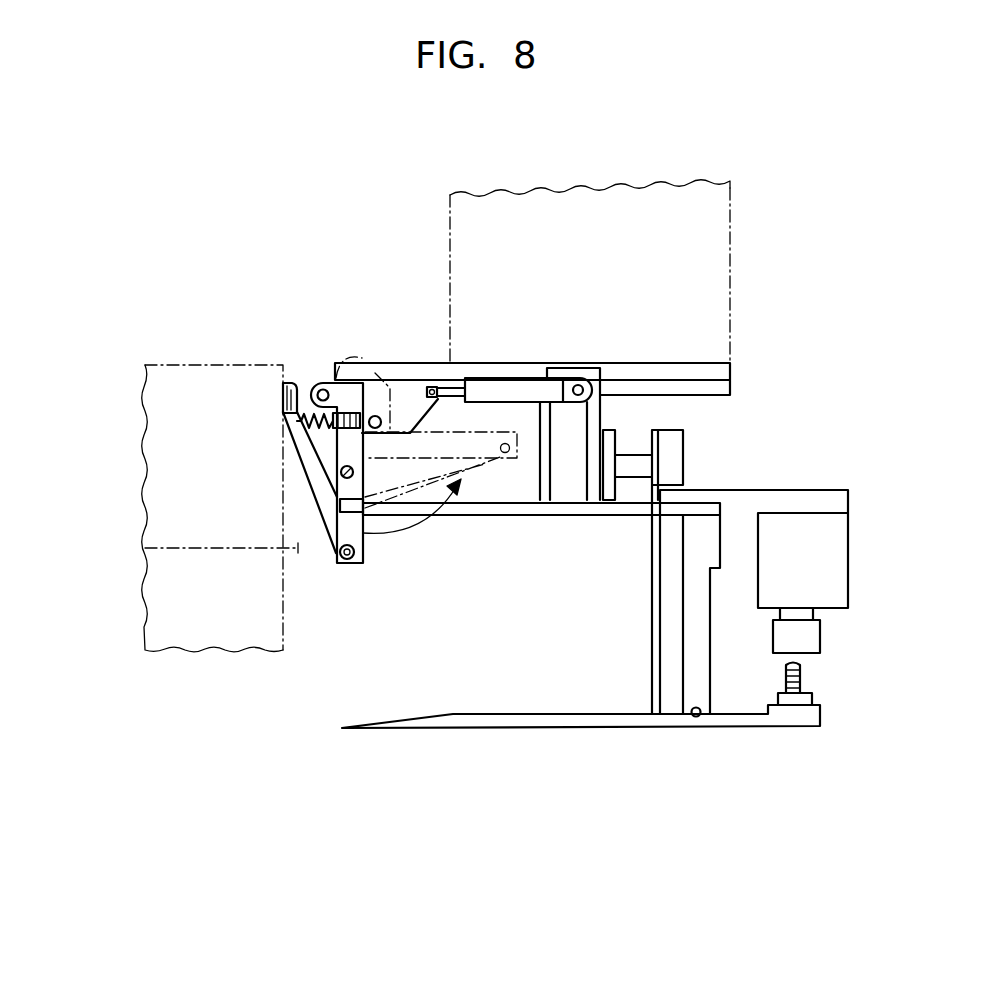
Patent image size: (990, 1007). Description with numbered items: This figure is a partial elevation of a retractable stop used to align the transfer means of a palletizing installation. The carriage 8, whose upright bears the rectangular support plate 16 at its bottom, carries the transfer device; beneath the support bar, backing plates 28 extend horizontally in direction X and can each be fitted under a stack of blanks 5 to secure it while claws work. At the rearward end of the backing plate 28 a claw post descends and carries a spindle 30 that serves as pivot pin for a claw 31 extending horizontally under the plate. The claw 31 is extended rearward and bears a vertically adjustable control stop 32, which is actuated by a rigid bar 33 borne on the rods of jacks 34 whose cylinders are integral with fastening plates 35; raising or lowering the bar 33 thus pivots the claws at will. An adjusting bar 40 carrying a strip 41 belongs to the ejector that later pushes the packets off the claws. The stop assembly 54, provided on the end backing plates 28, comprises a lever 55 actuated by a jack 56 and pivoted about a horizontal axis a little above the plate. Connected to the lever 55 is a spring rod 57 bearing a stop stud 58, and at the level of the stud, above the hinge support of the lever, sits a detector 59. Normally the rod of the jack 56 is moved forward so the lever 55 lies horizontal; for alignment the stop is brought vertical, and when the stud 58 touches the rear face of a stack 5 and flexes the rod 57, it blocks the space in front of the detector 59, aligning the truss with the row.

The stack of blanks 5 is at (222, 518).
The carriage 8 is at (612, 301).
The rectangular support plate 16 is at (695, 388).
The backing plate 28 is at (526, 508).
The spindle 30 is at (695, 720).
The claw 31 is at (574, 722).
The control stop 32 is at (803, 680).
The rigid bar 33 is at (812, 634).
The jack 34 is at (822, 577).
The fastening plate 35 is at (789, 497).
The adjusting bar 40 is at (628, 468).
The strip 41 is at (670, 443).
The stop assembly 54 is at (352, 565).
The lever 55 is at (357, 528).
The jack 56 is at (508, 387).
The spring rod 57 is at (300, 452).
The stop stud 58 is at (282, 395).
The detector 59 is at (319, 389).